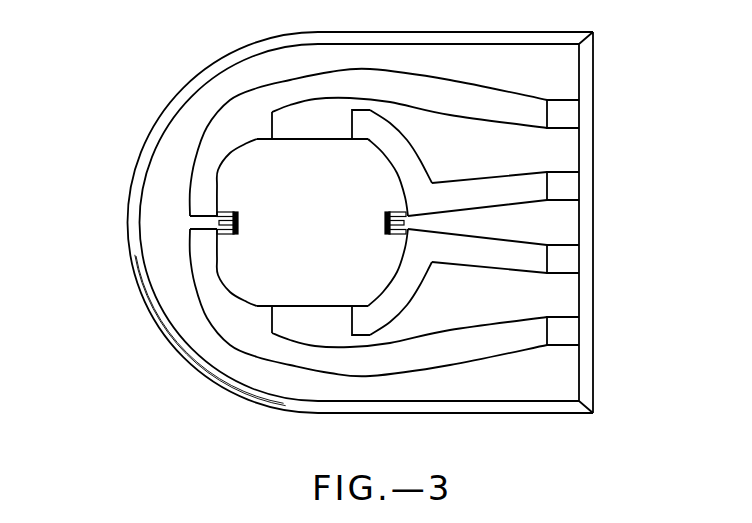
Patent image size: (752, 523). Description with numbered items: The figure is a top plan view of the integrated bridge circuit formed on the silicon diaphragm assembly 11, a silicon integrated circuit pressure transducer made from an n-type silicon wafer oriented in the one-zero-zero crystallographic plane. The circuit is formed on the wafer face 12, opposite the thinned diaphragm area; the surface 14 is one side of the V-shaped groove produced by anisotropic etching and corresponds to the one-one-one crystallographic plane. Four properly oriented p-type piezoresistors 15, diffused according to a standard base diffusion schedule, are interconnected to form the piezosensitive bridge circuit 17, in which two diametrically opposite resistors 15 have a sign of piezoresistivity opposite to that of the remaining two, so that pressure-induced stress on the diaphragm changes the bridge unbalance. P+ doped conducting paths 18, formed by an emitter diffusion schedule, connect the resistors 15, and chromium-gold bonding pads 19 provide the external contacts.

The silicon diaphragm assembly 11 is at (118, 257).
The face 12 is at (564, 69).
The surface 14 is at (585, 223).
The piezoresistors 15 is at (277, 140).
The bridge circuit 17 is at (416, 133).
The conducting paths 18 is at (473, 190).
The bonding pads 19 is at (570, 183).